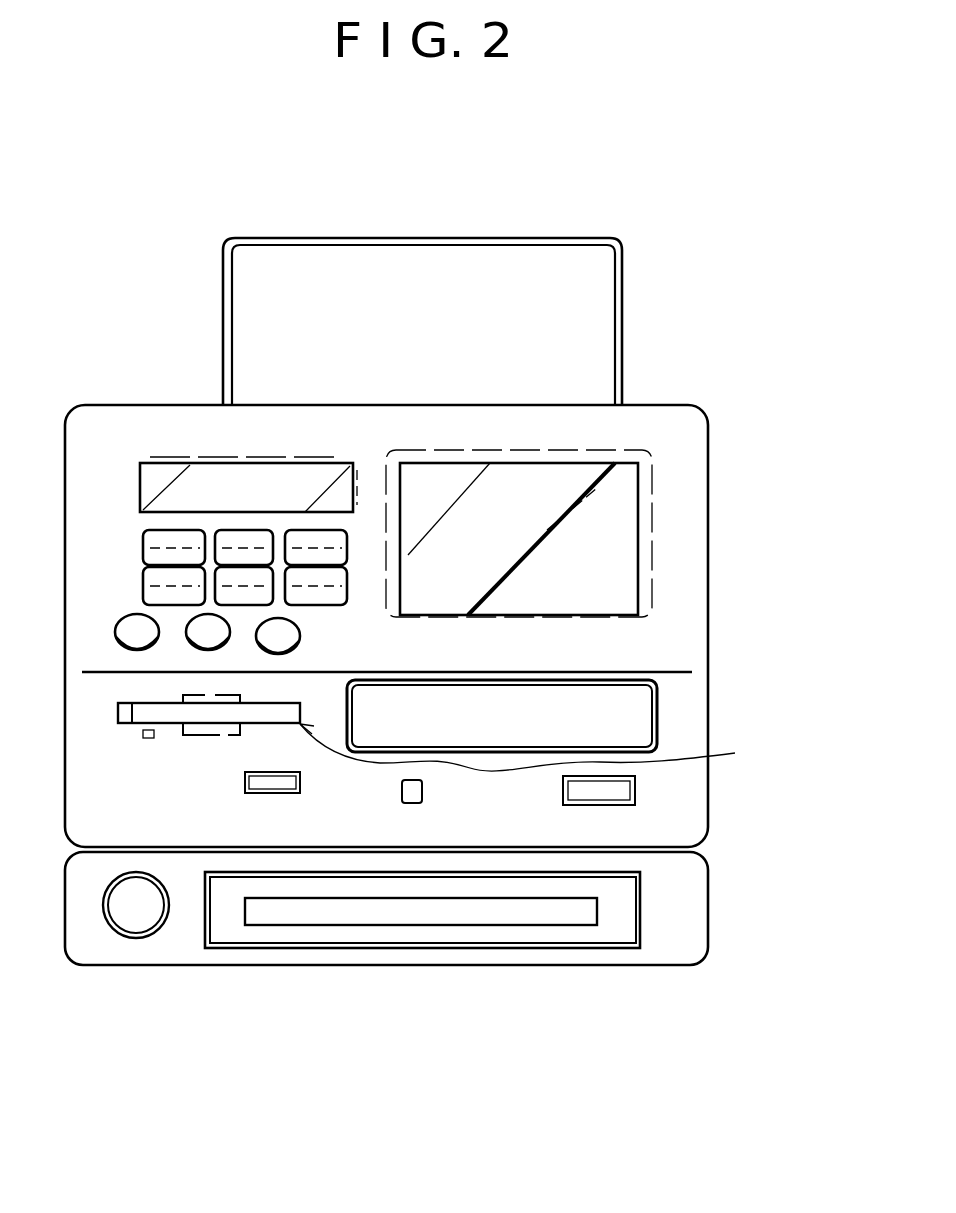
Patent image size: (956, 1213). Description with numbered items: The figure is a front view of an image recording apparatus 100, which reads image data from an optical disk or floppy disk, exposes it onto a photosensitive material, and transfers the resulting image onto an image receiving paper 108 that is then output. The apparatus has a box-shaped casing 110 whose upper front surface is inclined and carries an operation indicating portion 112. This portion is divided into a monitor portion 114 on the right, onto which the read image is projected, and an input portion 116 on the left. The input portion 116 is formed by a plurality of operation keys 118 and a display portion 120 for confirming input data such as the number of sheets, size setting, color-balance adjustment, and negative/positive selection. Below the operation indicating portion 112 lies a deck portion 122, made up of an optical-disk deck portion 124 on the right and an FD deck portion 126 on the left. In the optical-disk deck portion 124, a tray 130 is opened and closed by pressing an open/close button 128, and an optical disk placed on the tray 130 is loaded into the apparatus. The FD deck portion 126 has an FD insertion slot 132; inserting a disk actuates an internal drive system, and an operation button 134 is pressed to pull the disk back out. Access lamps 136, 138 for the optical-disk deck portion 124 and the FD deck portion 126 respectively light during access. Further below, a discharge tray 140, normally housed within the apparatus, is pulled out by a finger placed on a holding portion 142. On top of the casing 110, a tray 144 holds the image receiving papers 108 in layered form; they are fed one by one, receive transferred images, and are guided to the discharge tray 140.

The image recording apparatus 100 is at (737, 478).
The image receiving paper 108 is at (587, 270).
The casing 110 is at (693, 624).
The operation indicating portion 112 is at (216, 341).
The monitor portion 114 is at (430, 490).
The input portion 116 is at (126, 465).
The operation keys 118 is at (133, 620).
The display portion 120 is at (131, 486).
The deck portion 122 is at (805, 702).
The optical-disk deck portion 124 is at (657, 726).
The FD deck portion 126 is at (546, 749).
The open/close button 128 is at (617, 795).
The tray 130 is at (642, 701).
The FD insertion slot 132 is at (130, 724).
The operation button 134 is at (300, 783).
The access lamp 136 is at (420, 800).
The access lamp 138 is at (148, 740).
The discharge tray 140 is at (640, 907).
The holding portion 142 is at (520, 915).
The tray 144 is at (622, 305).